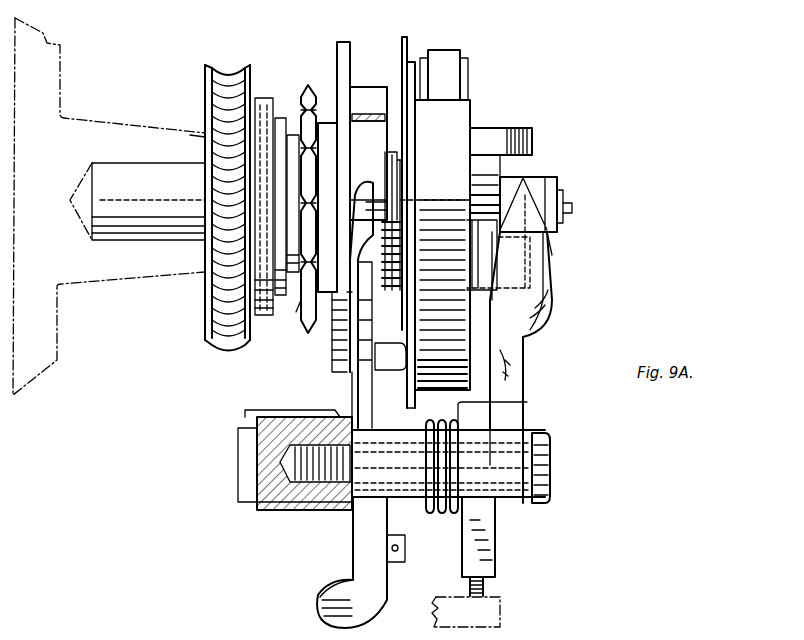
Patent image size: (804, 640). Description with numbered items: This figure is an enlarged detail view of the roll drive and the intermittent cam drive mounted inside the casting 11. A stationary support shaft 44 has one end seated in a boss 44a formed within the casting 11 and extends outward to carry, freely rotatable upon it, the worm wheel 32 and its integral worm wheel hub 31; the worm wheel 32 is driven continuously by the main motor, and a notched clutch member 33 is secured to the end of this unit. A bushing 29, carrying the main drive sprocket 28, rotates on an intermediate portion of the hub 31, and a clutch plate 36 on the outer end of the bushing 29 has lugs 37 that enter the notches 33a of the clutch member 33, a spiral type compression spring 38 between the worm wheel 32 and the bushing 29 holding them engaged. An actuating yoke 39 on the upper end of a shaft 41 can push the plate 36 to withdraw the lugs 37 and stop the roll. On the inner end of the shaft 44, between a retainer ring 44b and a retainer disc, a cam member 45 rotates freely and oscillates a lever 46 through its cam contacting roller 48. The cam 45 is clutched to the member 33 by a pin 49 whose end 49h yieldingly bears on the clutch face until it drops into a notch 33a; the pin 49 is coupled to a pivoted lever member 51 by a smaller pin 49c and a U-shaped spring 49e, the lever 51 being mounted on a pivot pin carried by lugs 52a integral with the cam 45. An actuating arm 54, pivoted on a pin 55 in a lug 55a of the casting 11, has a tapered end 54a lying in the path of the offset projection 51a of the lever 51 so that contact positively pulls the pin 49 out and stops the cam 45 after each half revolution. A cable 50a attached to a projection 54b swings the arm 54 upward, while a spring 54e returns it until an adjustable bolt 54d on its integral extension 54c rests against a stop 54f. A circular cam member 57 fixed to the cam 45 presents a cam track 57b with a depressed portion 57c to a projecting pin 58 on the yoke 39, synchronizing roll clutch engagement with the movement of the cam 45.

The casting 11 is at (48, 38).
The main drive sprocket 28 is at (305, 88).
The bushing 29 is at (327, 122).
The worm wheel hub 31 is at (298, 306).
The worm wheel 32 is at (205, 323).
The notched clutch member 33 is at (366, 87).
The notches 33a is at (318, 342).
The clutch plate 36 is at (338, 44).
The lugs 37 is at (360, 188).
The spiral type compression spring 38 is at (270, 100).
The actuating yoke 39 is at (355, 388).
The shaft 41 is at (248, 466).
The support shaft 44 is at (136, 175).
The boss 44a is at (97, 125).
The retainer ring 44b is at (400, 148).
The cam member 45 is at (462, 112).
The lever 46 is at (462, 72).
The cam contacting roller 48 is at (452, 50).
The pin 49 is at (565, 195).
The pin 49c is at (485, 259).
The U-shaped spring 49e is at (574, 208).
The end 49h is at (390, 204).
The cable 50a is at (407, 547).
The pivoted lever member 51 is at (545, 178).
The offset projection 51a is at (556, 234).
The lugs 52a is at (525, 128).
The actuating arm 54 is at (522, 368).
The tapered end 54a is at (556, 254).
The projection 54b is at (388, 580).
The integral extension 54c is at (497, 546).
The adjustable bolt 54d is at (487, 584).
The spring 54e is at (528, 402).
The stop 54f is at (502, 609).
The pin 55 is at (552, 466).
The lug 55a is at (284, 511).
The cam member 57 is at (414, 62).
The cam track 57b is at (402, 40).
The depressed portion 57c is at (410, 395).
The projecting pin 58 is at (394, 372).